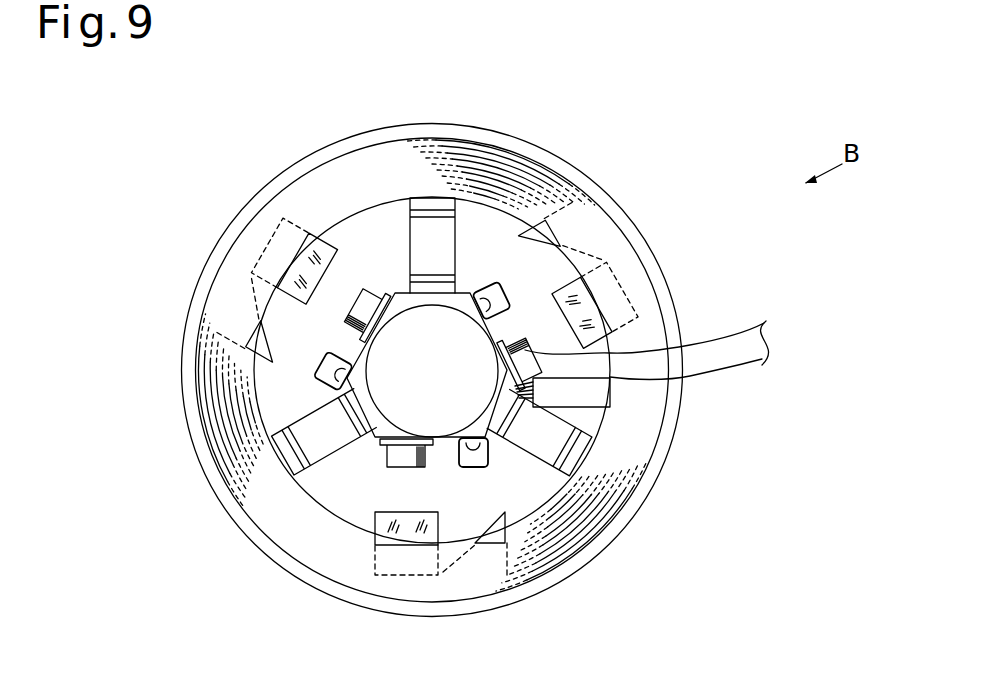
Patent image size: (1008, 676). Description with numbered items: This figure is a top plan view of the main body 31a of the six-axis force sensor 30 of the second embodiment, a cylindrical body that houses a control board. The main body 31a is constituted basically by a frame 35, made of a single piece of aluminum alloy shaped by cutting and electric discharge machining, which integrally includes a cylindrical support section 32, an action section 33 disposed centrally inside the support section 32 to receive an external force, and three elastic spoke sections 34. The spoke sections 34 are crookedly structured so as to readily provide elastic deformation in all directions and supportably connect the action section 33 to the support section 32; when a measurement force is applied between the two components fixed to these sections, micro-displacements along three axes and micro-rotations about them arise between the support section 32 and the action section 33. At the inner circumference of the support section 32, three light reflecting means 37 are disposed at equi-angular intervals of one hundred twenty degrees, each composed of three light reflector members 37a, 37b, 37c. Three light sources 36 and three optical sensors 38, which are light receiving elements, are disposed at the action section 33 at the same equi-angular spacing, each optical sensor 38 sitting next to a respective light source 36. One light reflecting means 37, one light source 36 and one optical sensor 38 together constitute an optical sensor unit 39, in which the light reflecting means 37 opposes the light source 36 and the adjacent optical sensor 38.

The six-axis force sensor 30 is at (187, 219).
The main body 31a is at (830, 453).
The support section 32 is at (397, 382).
The action section 33 is at (445, 263).
The elastic spoke section 34 is at (409, 336).
The frame 35 is at (469, 370).
The light source 36 is at (463, 292).
The light reflecting means 37 is at (494, 356).
The light reflector member 37a is at (469, 349).
The light reflector member 37b is at (501, 374).
The light reflector member 37c is at (490, 389).
The optical sensor 38 is at (642, 350).
The optical sensor unit 39 is at (658, 446).